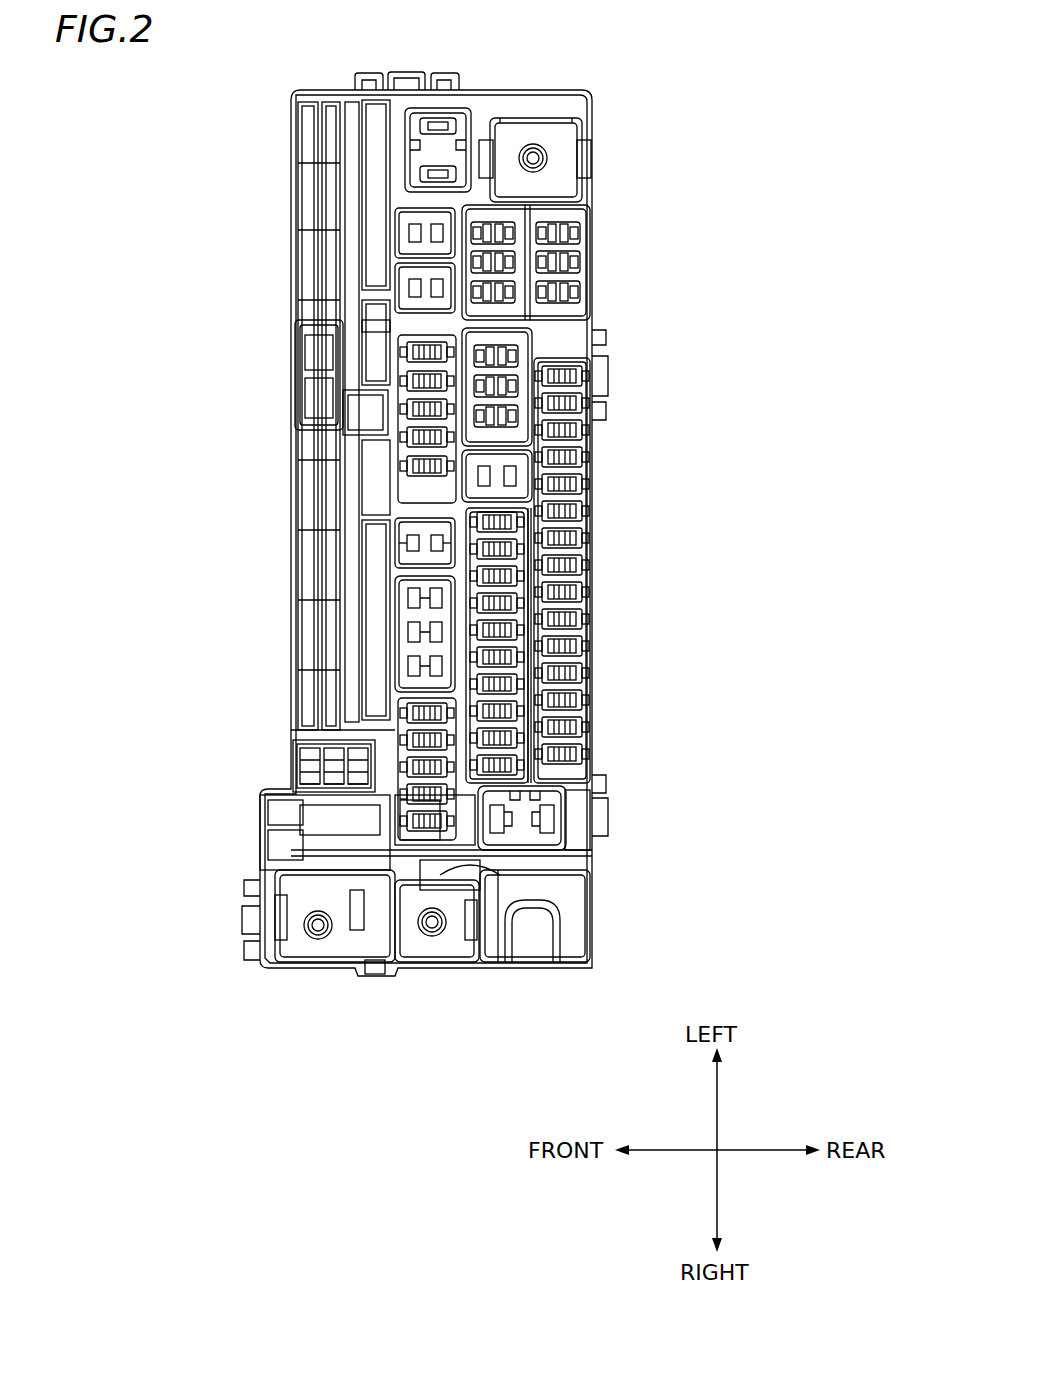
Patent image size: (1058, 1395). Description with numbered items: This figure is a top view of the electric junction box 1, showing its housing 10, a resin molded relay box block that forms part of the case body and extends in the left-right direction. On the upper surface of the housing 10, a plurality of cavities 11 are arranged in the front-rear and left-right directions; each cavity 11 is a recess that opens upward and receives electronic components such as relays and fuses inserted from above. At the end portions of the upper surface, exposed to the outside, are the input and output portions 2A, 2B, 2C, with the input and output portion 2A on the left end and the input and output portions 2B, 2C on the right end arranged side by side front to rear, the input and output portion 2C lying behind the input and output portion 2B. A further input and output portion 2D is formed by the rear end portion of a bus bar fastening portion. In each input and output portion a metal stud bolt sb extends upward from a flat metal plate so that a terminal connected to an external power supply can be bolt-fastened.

The electric junction box 1 is at (620, 60).
The housing 10 is at (278, 298).
The cavities 11 is at (563, 280).
The input and output portion 2A is at (566, 134).
The input and output portion 2B is at (294, 976).
The input and output portion 2C is at (410, 976).
The input and output portion 2D is at (512, 976).
The stud bolt sb is at (533, 144).